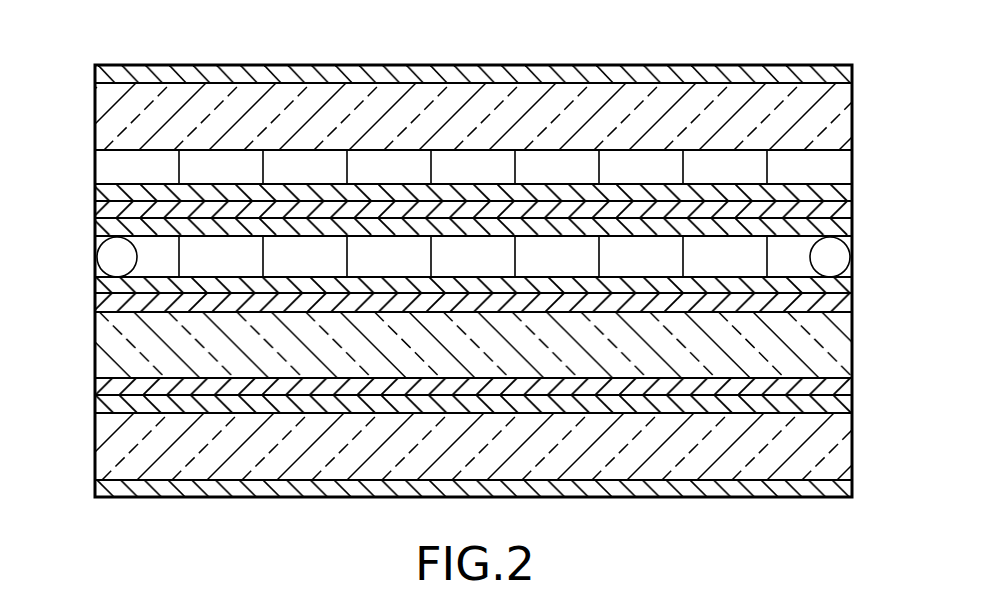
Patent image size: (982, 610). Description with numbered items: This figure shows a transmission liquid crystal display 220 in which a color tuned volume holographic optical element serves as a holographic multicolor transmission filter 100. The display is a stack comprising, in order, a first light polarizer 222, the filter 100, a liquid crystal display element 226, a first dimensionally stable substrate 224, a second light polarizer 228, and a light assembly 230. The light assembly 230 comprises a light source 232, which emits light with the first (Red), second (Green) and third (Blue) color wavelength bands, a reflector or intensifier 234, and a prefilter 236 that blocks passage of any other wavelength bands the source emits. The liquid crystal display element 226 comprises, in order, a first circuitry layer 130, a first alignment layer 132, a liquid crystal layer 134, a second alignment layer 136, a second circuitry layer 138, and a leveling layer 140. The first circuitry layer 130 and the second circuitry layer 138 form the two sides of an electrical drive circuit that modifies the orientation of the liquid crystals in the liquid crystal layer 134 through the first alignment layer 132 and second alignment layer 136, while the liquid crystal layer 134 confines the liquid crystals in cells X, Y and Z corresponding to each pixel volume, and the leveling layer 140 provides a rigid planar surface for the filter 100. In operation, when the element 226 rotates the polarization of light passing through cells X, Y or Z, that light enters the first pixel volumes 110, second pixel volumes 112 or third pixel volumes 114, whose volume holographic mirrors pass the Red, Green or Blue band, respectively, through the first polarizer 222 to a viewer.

The liquid crystal display 220 is at (790, 42).
The first light polarizer 222 is at (852, 75).
The holographic multicolor transmission filter 100 is at (857, 85).
The third pixel volumes 114 is at (292, 151).
The second pixel volumes 112 is at (387, 151).
The first pixel volumes 110 is at (475, 151).
The leveling layer 140 is at (95, 192).
The second circuitry layer 138 is at (95, 208).
The second alignment layer 136 is at (95, 226).
The liquid crystal layer 134 is at (95, 258).
The first alignment layer 132 is at (95, 287).
The first circuitry layer 130 is at (95, 305).
The liquid crystal display element 226 is at (857, 205).
The first dimensionally stable substrate 224 is at (852, 347).
The second light polarizer 228 is at (852, 387).
The prefilter 236 is at (95, 403).
The light assembly 230 is at (857, 400).
The light source 232 is at (95, 452).
The reflector or intensifier 234 is at (95, 488).